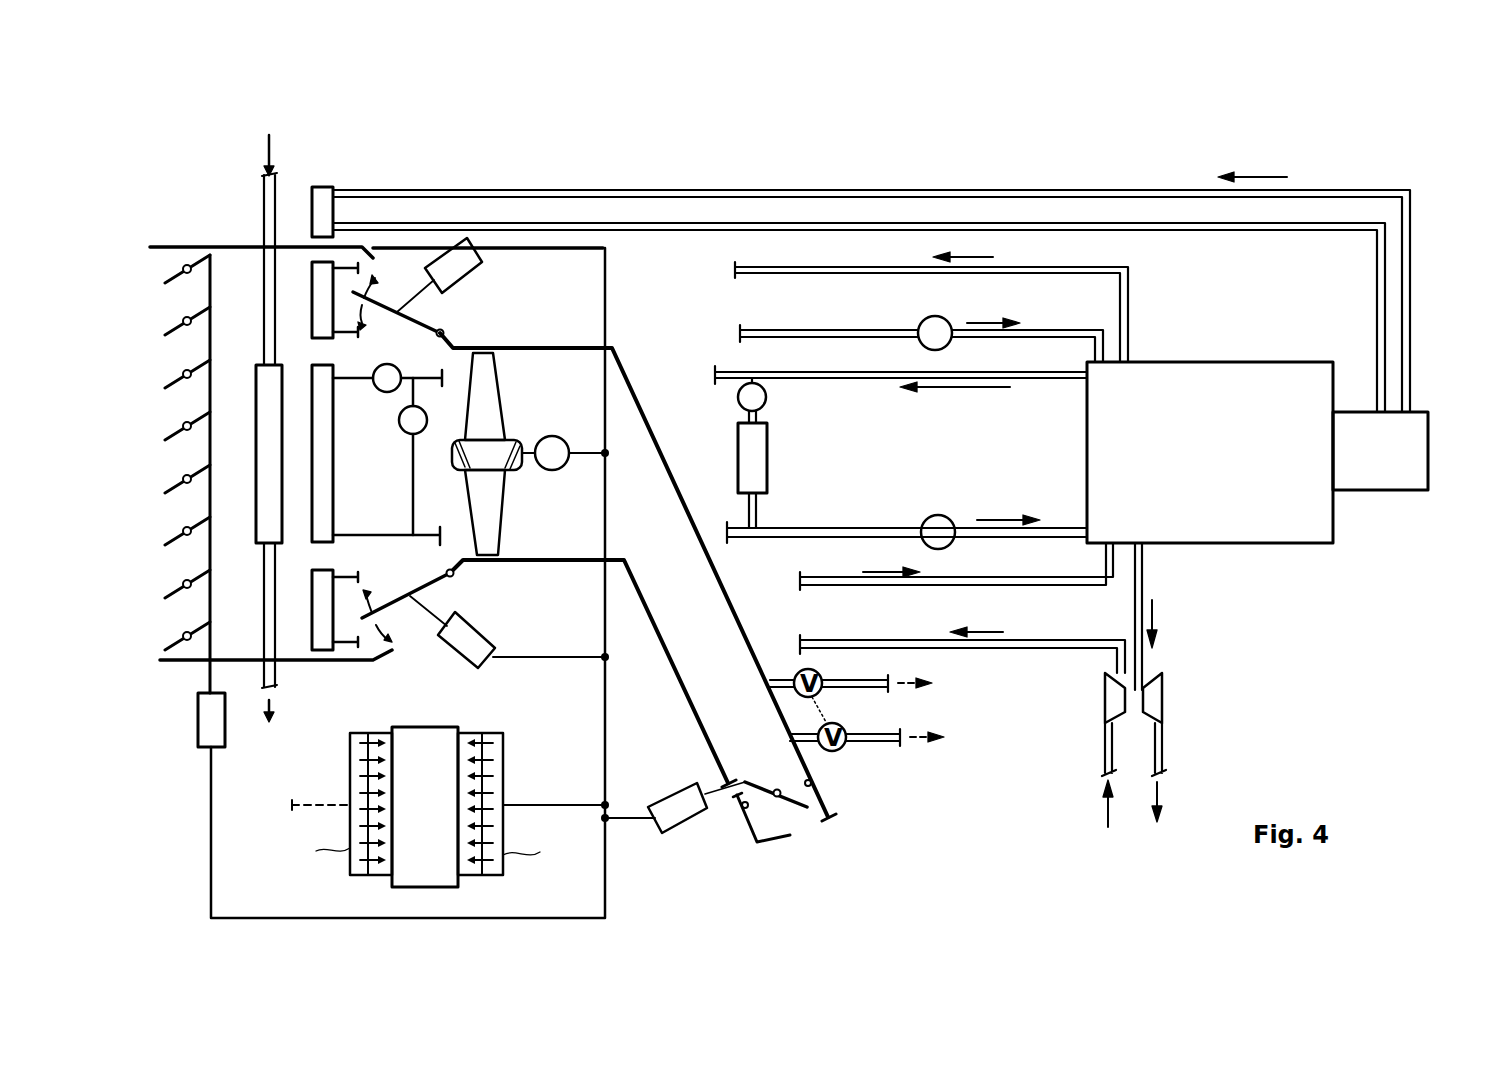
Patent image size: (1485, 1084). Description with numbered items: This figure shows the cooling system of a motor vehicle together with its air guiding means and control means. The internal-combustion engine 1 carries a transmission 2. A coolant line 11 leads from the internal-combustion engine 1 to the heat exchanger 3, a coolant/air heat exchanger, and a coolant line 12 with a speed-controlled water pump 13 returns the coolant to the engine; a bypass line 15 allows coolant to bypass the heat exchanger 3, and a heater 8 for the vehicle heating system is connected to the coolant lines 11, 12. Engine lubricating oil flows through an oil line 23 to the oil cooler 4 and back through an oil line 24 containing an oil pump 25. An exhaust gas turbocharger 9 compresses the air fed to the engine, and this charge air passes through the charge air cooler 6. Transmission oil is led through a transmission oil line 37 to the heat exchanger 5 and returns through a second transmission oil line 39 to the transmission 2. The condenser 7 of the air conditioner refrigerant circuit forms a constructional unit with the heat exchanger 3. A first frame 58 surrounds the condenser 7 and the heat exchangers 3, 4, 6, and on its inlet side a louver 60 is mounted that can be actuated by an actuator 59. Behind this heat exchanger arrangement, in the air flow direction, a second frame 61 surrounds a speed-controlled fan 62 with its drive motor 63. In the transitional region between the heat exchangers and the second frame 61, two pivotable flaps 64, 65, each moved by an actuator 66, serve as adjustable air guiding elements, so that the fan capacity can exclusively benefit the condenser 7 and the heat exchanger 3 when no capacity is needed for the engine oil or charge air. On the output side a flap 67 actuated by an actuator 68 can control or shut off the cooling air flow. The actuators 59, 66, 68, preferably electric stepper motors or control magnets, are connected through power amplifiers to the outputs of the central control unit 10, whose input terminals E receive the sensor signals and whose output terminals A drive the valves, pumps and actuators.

The internal-combustion engine 1 is at (1280, 543).
The transmission 2 is at (1390, 490).
The heat exchanger 3 is at (333, 426).
The oil cooler 4 is at (312, 300).
The heat exchanger 5 is at (323, 187).
The charge air cooler 6 is at (312, 614).
The condenser 7 is at (264, 392).
The heater 8 is at (767, 440).
The exhaust gas turbocharger 9 is at (1160, 698).
The central control unit 10 is at (410, 870).
The coolant line 11 is at (357, 380).
The coolant line 12 is at (390, 540).
The water pump 13 is at (950, 520).
The bypass line 15 is at (413, 465).
The oil line 23 is at (1128, 295).
The oil line 24 is at (1048, 330).
The oil pump 25 is at (940, 316).
The transmission oil line 37 is at (733, 190).
The second transmission oil line 39 is at (663, 230).
The first frame 58 is at (220, 247).
The actuator 59 is at (225, 738).
The louver 60 is at (200, 650).
The second frame 61 is at (568, 348).
The fan 62 is at (492, 405).
The drive motor 63 is at (552, 470).
The pivotable flap 64 is at (428, 322).
The pivotable flap 65 is at (440, 588).
The actuator 66 is at (482, 262).
The flap 67 is at (800, 806).
The actuator 68 is at (690, 812).